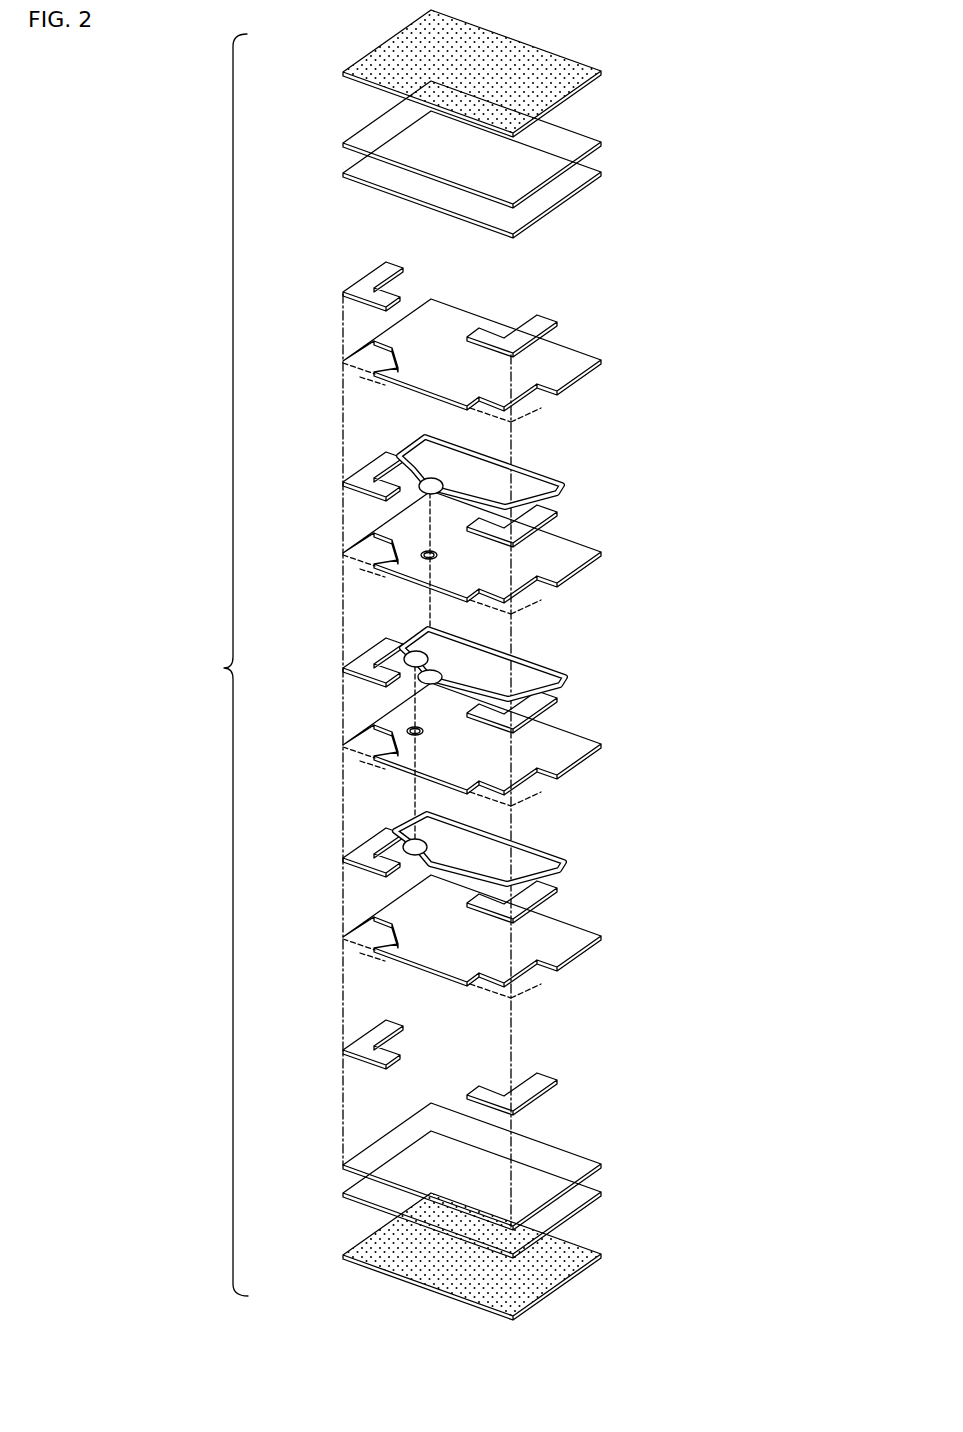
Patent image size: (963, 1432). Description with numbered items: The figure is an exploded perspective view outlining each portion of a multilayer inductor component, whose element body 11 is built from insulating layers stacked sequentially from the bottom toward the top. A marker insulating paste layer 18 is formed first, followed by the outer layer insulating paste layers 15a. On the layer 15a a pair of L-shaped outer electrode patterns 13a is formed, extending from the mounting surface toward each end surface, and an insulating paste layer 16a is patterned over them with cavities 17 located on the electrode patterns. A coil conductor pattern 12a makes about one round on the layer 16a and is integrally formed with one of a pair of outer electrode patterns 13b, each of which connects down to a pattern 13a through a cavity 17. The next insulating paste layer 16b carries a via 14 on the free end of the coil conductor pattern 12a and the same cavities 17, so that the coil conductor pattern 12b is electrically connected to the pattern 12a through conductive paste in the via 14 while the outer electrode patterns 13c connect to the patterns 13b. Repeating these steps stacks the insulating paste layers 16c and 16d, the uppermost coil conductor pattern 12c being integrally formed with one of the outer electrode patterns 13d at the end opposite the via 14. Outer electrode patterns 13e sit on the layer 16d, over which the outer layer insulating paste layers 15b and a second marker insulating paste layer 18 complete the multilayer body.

The element body 11 is at (223, 665).
The coil conductor pattern 12a is at (550, 853).
The coil conductor pattern 12b is at (540, 655).
The coil conductor pattern 12c is at (532, 462).
The outer electrode pattern 13a is at (380, 1022).
The outer electrode pattern 13b is at (380, 833).
The outer electrode pattern 13c is at (380, 643).
The outer electrode pattern 13d is at (380, 454).
The outer electrode pattern 13e is at (396, 266).
The via 14 is at (436, 550).
The outer layer insulating paste layer 15a is at (596, 1152).
The outer layer insulating paste layer 15b is at (596, 130).
The insulating paste layer 16a is at (560, 939).
The insulating paste layer 16b is at (562, 747).
The insulating paste layer 16c is at (562, 555).
The insulating paste layer 16d is at (578, 356).
The cavity 17 is at (378, 346).
The marker insulating paste layer 18 is at (596, 65).